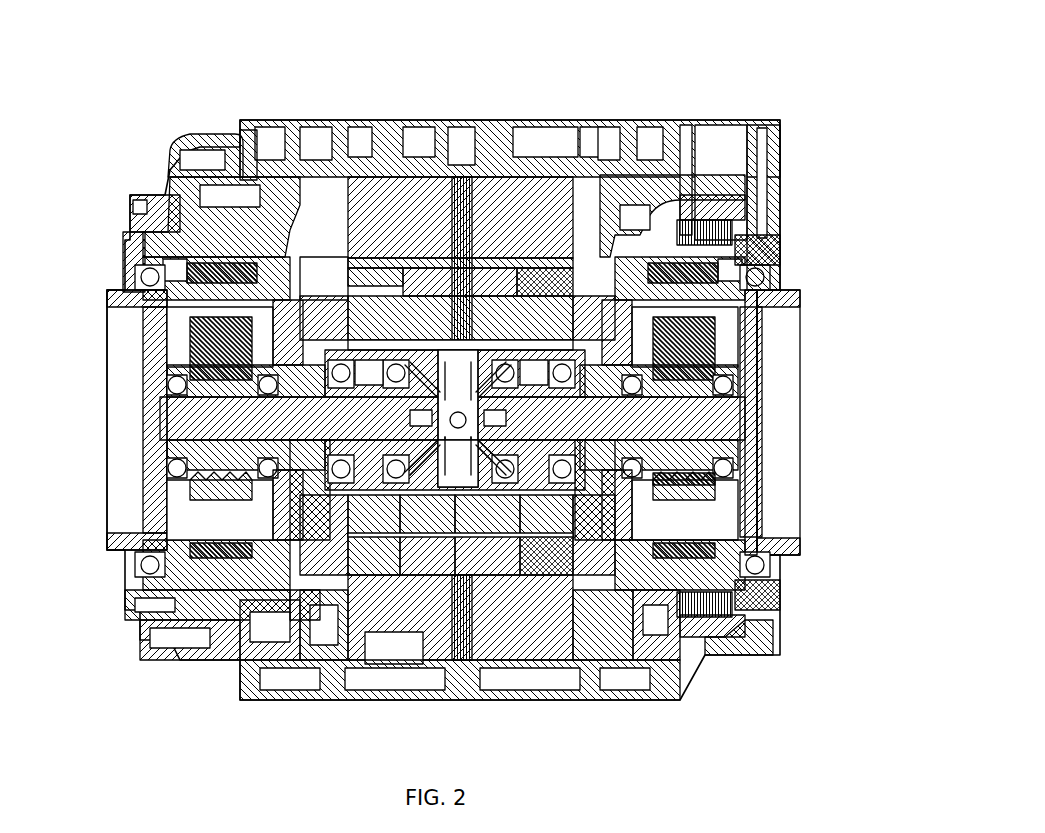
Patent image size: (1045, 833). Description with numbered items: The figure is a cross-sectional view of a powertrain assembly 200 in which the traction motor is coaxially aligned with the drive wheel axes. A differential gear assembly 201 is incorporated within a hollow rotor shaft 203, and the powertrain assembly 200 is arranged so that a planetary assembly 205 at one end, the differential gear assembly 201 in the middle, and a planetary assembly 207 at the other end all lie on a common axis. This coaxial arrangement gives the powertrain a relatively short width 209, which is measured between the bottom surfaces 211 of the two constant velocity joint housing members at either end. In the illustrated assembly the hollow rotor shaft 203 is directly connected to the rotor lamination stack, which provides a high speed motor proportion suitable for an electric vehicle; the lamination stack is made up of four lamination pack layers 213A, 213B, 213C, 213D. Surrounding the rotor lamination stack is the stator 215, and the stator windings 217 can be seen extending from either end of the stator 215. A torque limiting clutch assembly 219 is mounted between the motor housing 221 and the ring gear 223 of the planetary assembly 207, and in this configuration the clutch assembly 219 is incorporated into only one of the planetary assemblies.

The powertrain assembly 200 is at (815, 118).
The differential gear assembly 201 is at (492, 478).
The hollow rotor shaft 203 is at (473, 497).
The planetary assembly 205 is at (95, 292).
The planetary assembly 207 is at (812, 310).
The width 209 is at (143, 445).
The bottom surfaces 211 is at (147, 383).
The lamination pack layer 213A is at (367, 545).
The lamination pack layer 213B is at (438, 530).
The lamination pack layer 213C is at (488, 535).
The lamination pack layer 213D is at (598, 600).
The stator 215 is at (546, 243).
The stator windings 217 is at (305, 602).
The torque limiting clutch assembly 219 is at (735, 232).
The motor housing 221 is at (718, 213).
The ring gear 223 is at (765, 247).